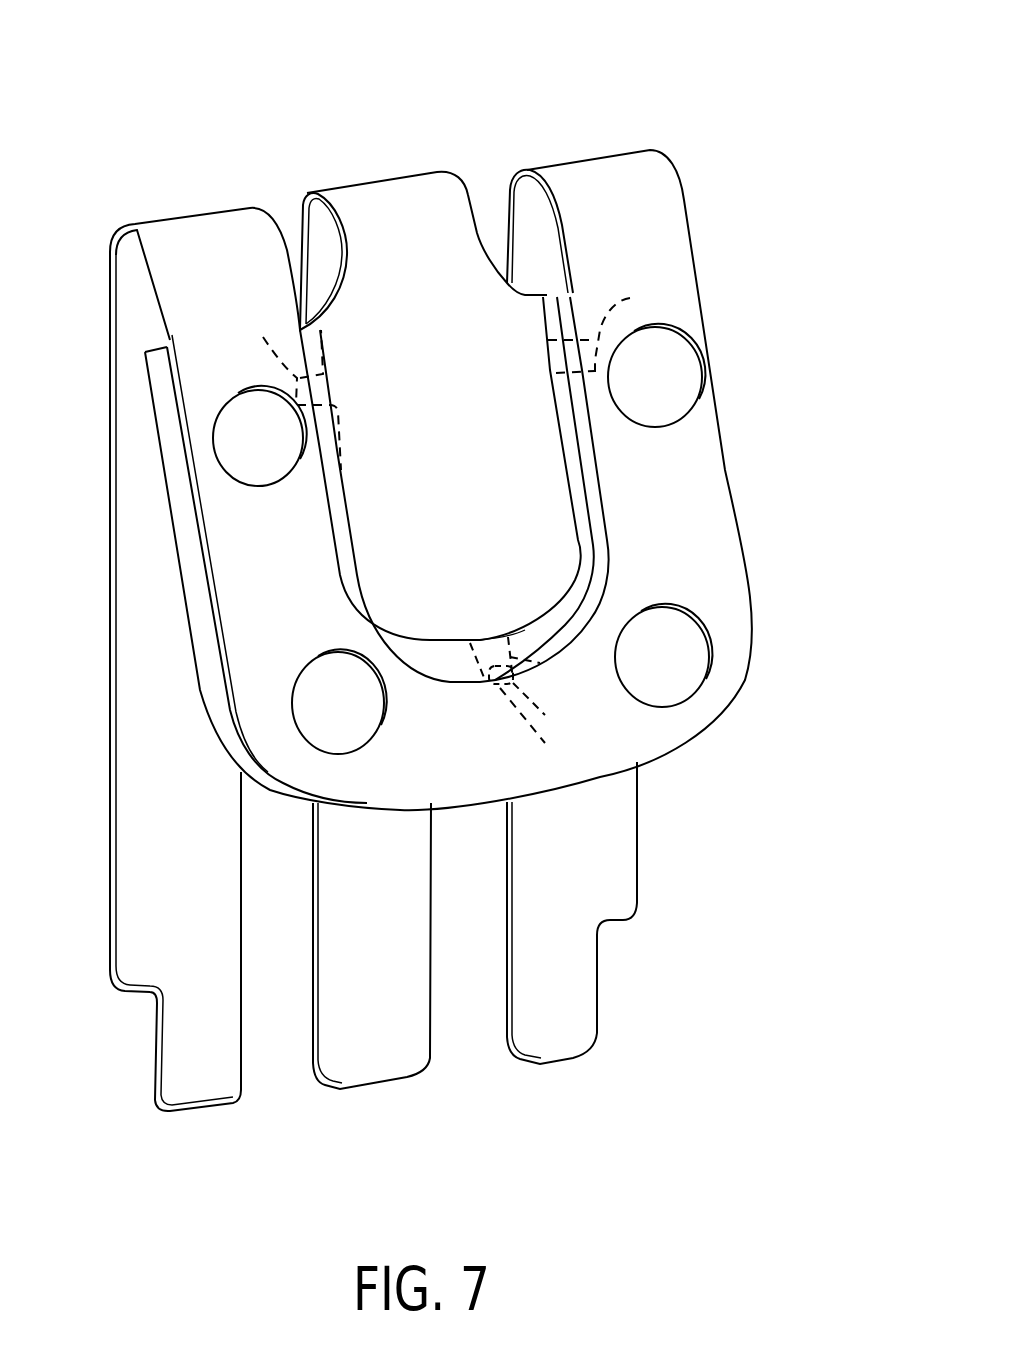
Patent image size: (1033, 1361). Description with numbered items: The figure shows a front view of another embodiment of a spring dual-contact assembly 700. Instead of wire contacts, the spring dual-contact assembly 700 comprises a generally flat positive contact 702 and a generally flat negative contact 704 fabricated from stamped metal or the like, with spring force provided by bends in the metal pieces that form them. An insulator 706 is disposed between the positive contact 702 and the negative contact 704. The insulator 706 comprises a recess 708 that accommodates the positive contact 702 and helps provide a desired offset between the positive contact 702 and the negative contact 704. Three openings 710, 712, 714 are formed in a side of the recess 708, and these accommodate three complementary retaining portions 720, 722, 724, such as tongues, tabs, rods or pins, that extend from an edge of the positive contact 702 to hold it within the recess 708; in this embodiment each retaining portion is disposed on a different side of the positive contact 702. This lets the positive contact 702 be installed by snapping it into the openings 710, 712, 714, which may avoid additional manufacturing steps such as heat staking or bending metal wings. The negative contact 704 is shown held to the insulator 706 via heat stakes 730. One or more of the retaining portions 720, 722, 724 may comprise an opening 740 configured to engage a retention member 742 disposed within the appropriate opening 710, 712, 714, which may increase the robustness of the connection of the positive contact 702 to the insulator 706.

The spring dual-contact assembly 700 is at (732, 99).
The positive contact 702 is at (482, 479).
The negative contact 704 is at (705, 493).
The insulator 706 is at (147, 385).
The recess 708 is at (545, 526).
The opening 710 is at (578, 325).
The opening 712 is at (338, 434).
The opening 714 is at (481, 623).
The retaining portion 720 is at (611, 325).
The retaining portion 722 is at (292, 383).
The retaining portion 724 is at (546, 668).
The heat stake 730 is at (680, 664).
The opening 740 is at (533, 737).
The retention member 742 is at (546, 712).